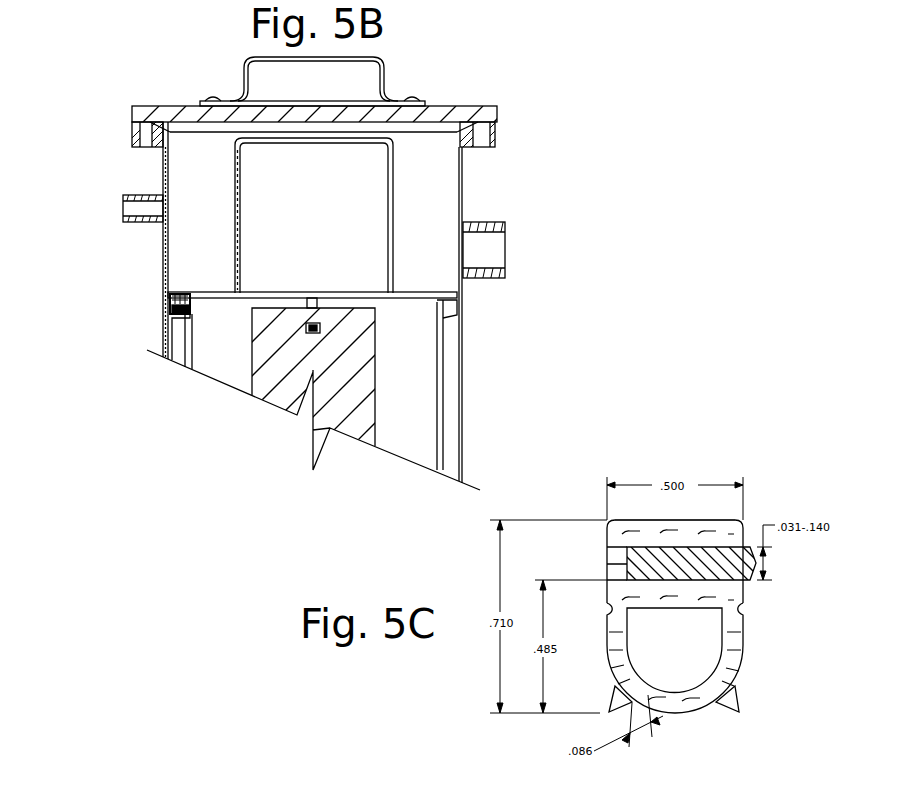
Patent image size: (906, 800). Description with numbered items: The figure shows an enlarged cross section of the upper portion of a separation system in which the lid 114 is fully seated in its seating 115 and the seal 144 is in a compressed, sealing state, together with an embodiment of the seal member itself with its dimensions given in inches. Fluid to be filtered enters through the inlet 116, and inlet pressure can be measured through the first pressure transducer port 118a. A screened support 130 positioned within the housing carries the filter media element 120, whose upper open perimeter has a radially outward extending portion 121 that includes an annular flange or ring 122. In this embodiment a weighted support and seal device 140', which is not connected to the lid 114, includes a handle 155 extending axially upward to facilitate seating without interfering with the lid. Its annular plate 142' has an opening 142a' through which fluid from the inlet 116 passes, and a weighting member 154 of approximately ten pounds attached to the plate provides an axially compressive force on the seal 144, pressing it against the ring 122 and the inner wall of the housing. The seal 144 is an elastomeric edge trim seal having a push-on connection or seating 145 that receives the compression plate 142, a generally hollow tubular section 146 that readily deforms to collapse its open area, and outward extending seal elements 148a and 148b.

In FIG. 5B, the lid 114 is at (440, 104).
In FIG. 5B, the seating 115 is at (495, 127).
In FIG. 5B, the inlet 116 is at (517, 233).
In FIG. 5B, the first pressure transducer port 118a is at (113, 207).
In FIG. 5B, the filter media element 120 is at (195, 350).
In FIG. 5B, the radially outward extending portion 121 is at (190, 300).
In FIG. 5B, the annular flange or ring 122 is at (457, 313).
In FIG. 5B, the support 130 is at (440, 345).
In FIG. 5B, the weighted support and seal device 140' is at (141, 215).
In FIG. 5B, the annular plate 142' is at (527, 346).
In FIG. 5B, the opening 142a' is at (187, 268).
In FIG. 5B, the seal 144 is at (445, 302).
In FIG. 5C, the seal 144 is at (767, 454).
In FIG. 5B, the weighting member 154 is at (387, 355).
In FIG. 5B, the handle 155 is at (393, 207).
In FIG. 5C, the support plate 142 is at (668, 497).
In FIG. 5C, the push-on connection or seating 145 is at (627, 538).
In FIG. 5C, the tubular section 146 is at (743, 630).
In FIG. 5C, the outward extending seal element 148a is at (605, 713).
In FIG. 5C, the outward extending seal element 148b is at (743, 715).